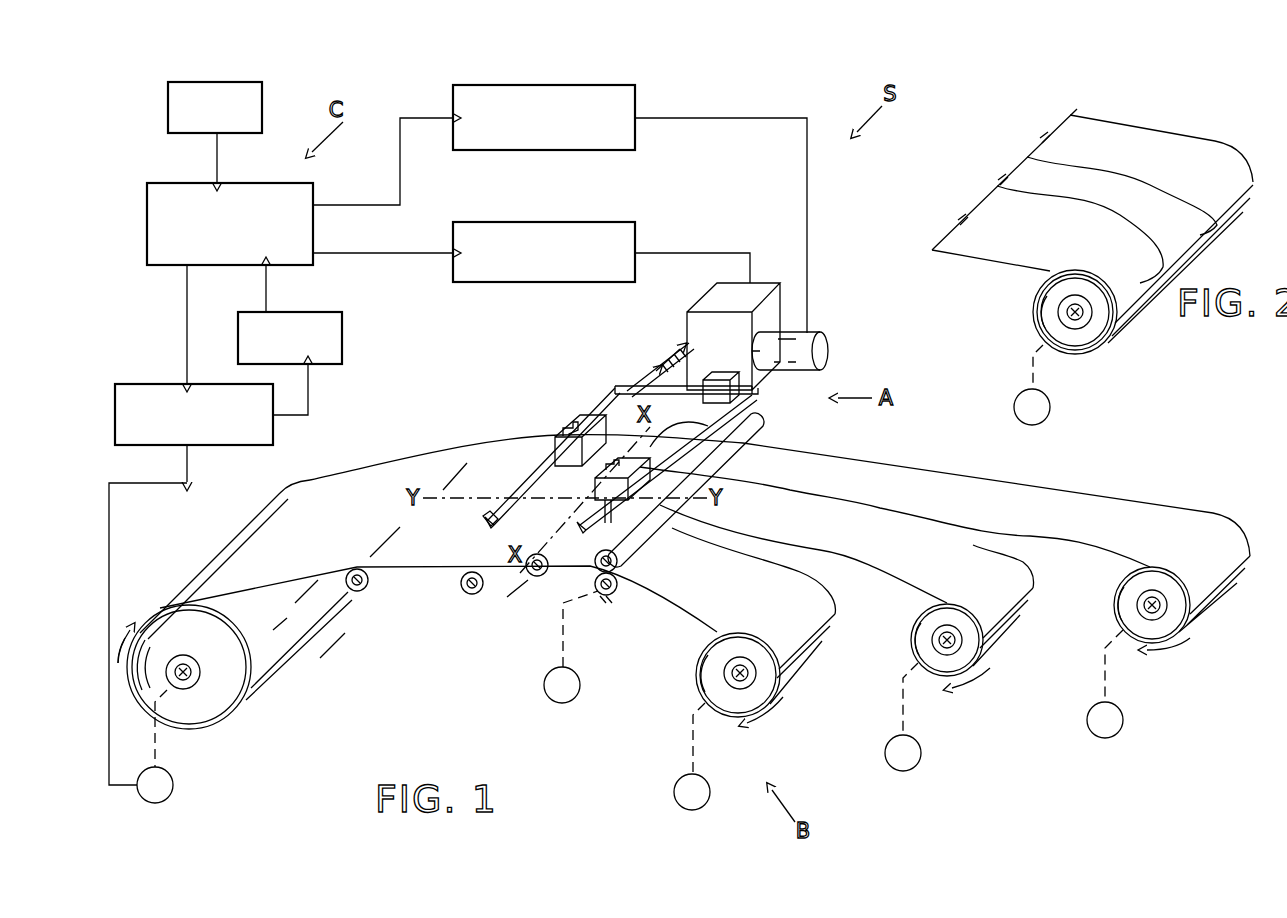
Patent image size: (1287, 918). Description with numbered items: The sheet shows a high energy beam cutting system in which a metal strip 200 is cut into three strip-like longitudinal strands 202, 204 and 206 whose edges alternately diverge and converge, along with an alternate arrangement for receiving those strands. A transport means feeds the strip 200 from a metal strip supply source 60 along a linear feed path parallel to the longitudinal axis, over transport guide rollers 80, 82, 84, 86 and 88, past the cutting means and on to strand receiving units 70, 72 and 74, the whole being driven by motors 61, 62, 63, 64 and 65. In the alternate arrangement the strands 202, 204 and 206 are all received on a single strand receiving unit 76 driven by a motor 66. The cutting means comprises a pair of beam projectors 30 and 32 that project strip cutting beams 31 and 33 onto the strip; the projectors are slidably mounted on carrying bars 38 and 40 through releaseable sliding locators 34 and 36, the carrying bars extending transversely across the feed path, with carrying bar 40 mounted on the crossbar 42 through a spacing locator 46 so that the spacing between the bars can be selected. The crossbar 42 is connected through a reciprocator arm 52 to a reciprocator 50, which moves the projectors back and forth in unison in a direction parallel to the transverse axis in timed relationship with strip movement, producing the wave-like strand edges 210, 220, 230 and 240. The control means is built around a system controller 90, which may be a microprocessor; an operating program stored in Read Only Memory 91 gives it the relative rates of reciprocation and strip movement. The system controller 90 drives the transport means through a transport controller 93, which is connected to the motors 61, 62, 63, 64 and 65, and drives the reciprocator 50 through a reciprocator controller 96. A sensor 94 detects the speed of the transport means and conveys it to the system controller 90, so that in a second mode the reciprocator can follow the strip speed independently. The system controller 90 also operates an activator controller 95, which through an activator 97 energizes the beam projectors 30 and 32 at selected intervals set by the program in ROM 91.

In FIG. 1, the beam projector 30 is at (570, 452).
In FIG. 1, the projected beam 31 is at (560, 478).
In FIG. 1, the beam projector 32 is at (614, 470).
In FIG. 1, the projected beam 33 is at (616, 521).
In FIG. 1, the releaseable sliding locator 34 is at (574, 428).
In FIG. 1, the releaseable sliding locator 36 is at (700, 476).
In FIG. 1, the carrying bar 38 is at (486, 520).
In FIG. 1, the carrying bar 40 is at (618, 562).
In FIG. 1, the crossbar 42 is at (640, 385).
In FIG. 1, the spacing locator 46 is at (735, 406).
In FIG. 1, the reciprocator 50 is at (690, 322).
In FIG. 1, the reciprocator arm 52 is at (700, 346).
In FIG. 1, the metal strip supply source 60 is at (195, 677).
In FIG. 1, the motor 61 is at (173, 785).
In FIG. 1, the motor 62 is at (575, 700).
In FIG. 1, the motor 63 is at (708, 783).
In FIG. 1, the motor 64 is at (920, 752).
In FIG. 1, the motor 65 is at (1123, 722).
In FIG. 2, the motor 66 is at (1050, 405).
In FIG. 1, the strand receiving unit 70 is at (735, 676).
In FIG. 1, the strand receiving unit 72 is at (960, 642).
In FIG. 1, the strand receiving unit 74 is at (1140, 604).
In FIG. 2, the single strand receiving unit 76 is at (1081, 318).
In FIG. 1, the transport guide roller 80 is at (365, 587).
In FIG. 1, the transport guide roller 82 is at (465, 590).
In FIG. 1, the transport guide roller 84 is at (530, 576).
In FIG. 1, the transport guide roller 86 is at (616, 592).
In FIG. 1, the transport guide roller 88 is at (605, 600).
In FIG. 1, the system controller 90 is at (180, 184).
In FIG. 1, the Read Only Memory 91 is at (168, 106).
In FIG. 1, the transport controller 93 is at (218, 446).
In FIG. 1, the sensor 94 is at (342, 323).
In FIG. 1, the activator controller 95 is at (630, 101).
In FIG. 1, the reciprocator controller 96 is at (580, 223).
In FIG. 1, the activator 97 is at (822, 349).
In FIG. 1, the metal strip 200 is at (365, 486).
In FIG. 1, the strand 202 is at (1108, 511).
In FIG. 2, the strand 202 is at (1117, 131).
In FIG. 1, the strand 204 is at (884, 527).
In FIG. 2, the strand 204 is at (1003, 197).
In FIG. 1, the strand 206 is at (705, 598).
In FIG. 2, the strand 206 is at (993, 244).
In FIG. 1, the strand edge 210 is at (1112, 548).
In FIG. 1, the strand edge 220 is at (978, 533).
In FIG. 1, the strand edge 230 is at (920, 586).
In FIG. 1, the strand edge 240 is at (793, 578).